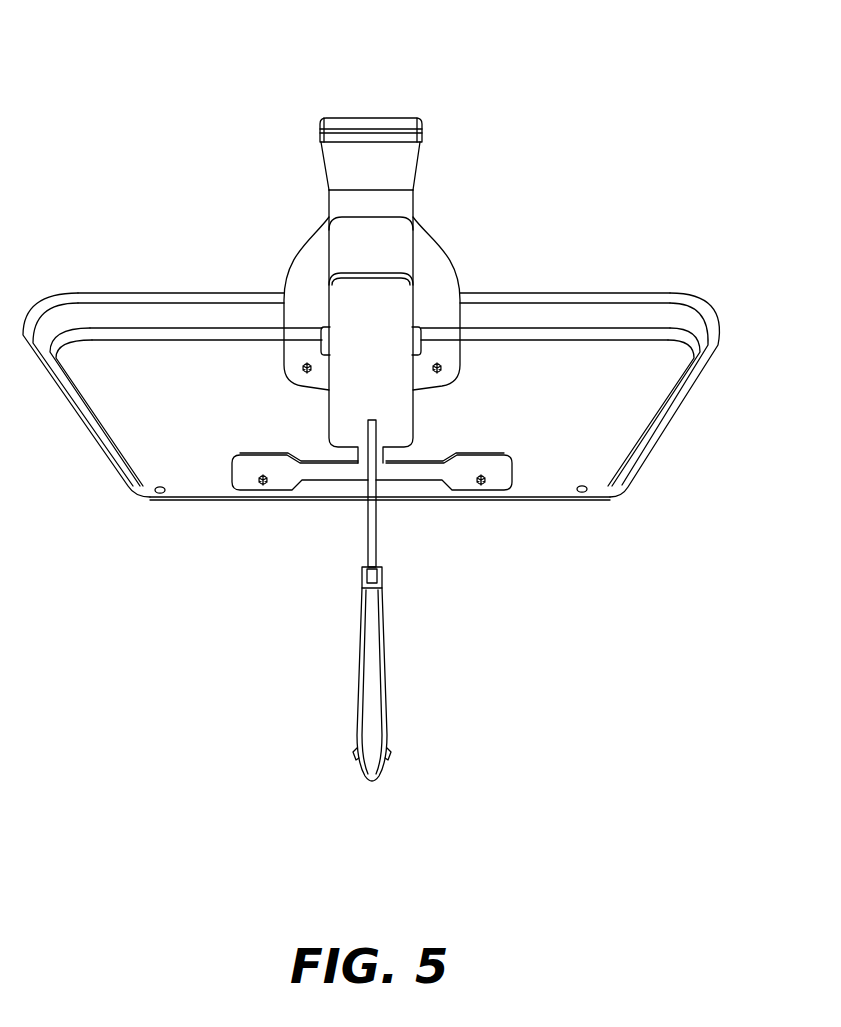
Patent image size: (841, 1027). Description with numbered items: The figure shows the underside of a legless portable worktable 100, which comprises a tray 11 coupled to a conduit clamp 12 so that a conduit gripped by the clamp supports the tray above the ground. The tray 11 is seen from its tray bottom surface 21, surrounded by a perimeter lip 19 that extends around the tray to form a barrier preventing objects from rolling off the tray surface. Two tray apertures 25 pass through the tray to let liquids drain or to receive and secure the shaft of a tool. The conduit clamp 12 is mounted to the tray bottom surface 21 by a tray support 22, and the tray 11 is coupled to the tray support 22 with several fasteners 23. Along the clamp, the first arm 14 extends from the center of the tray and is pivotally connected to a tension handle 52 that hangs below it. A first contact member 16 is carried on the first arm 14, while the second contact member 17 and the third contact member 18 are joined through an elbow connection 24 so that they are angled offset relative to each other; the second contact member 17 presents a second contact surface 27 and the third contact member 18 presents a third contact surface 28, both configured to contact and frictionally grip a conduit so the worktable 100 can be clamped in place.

The legless portable worktable 100 is at (95, 58).
The tray 11 is at (108, 433).
The conduit clamp 12 is at (453, 531).
The first arm 14 is at (370, 514).
The first contact member 16 is at (378, 325).
The second contact member 17 is at (342, 123).
The third contact member 18 is at (318, 272).
The perimeter lip 19 is at (175, 317).
The tray bottom surface 21 is at (605, 402).
The tray support 22 is at (283, 463).
The fasteners 23 is at (300, 371).
The elbow connection 24 is at (388, 202).
The tray aperture 25 is at (155, 495).
The second contact surface 27 is at (392, 161).
The third contact surface 28 is at (361, 237).
The tension handle 52 is at (370, 688).